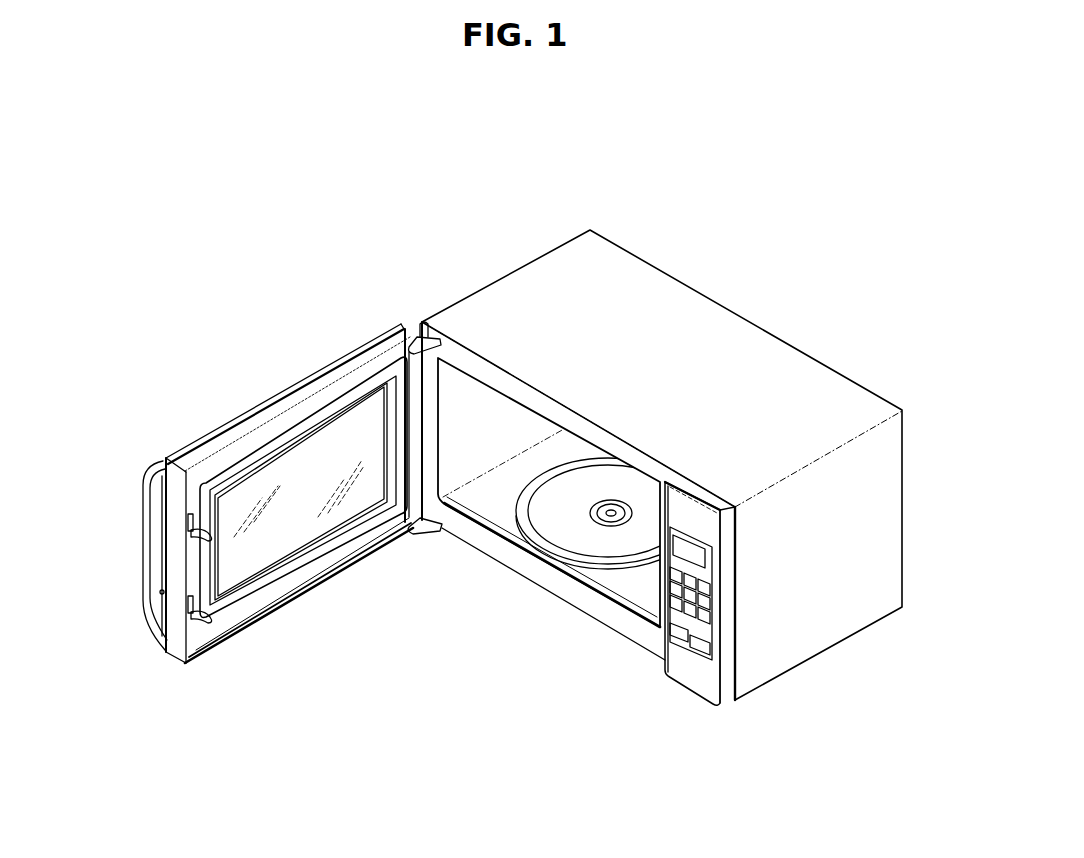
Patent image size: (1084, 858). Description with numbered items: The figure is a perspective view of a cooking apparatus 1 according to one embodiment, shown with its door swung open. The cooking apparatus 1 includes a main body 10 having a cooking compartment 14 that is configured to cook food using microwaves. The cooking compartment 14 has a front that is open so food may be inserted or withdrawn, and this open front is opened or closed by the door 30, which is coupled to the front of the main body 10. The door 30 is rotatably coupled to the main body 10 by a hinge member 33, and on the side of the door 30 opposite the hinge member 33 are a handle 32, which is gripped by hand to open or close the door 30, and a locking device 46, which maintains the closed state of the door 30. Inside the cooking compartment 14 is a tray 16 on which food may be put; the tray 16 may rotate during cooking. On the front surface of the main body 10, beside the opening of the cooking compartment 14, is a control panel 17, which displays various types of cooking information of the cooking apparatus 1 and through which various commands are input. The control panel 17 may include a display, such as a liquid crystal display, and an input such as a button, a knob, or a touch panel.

The cooking apparatus 1 is at (591, 153).
The main body 10 is at (718, 327).
The cooking compartment 14 is at (497, 454).
The tray 16 is at (583, 539).
The control panel 17 is at (692, 668).
The door 30 is at (268, 408).
The handle 32 is at (149, 466).
The hinge member 33 is at (424, 324).
The locking device 46 is at (206, 624).